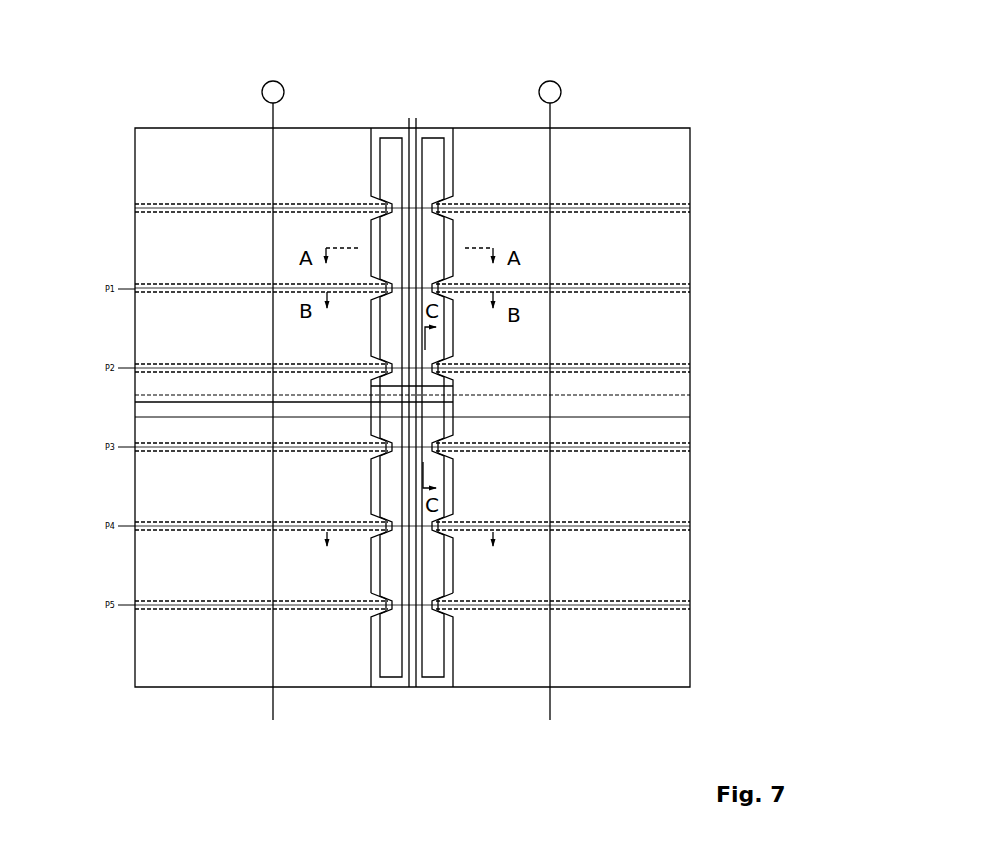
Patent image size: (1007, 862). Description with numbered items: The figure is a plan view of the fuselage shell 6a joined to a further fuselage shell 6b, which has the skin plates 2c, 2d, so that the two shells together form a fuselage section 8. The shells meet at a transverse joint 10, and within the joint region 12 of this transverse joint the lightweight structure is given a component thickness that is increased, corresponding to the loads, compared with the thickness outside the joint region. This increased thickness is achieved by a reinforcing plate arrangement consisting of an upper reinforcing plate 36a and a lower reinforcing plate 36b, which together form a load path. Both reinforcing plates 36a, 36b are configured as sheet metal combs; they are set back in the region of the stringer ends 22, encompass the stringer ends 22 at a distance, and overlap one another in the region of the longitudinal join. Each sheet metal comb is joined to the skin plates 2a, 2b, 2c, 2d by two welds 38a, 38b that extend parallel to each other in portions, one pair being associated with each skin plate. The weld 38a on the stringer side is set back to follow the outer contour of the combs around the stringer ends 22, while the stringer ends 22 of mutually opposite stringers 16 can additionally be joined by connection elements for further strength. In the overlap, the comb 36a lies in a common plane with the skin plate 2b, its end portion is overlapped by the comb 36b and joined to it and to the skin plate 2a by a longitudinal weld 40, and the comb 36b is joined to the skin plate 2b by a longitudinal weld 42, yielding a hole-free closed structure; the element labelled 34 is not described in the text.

The fuselage section 8 is at (735, 65).
The transverse joint 10 is at (451, 108).
The joint region 12 is at (397, 697).
The stringers 16 is at (138, 209).
The skin plate 2a is at (678, 248).
The skin plate 2b is at (678, 562).
The skin plate 2c is at (166, 265).
The skin plate 2d is at (166, 570).
The fuselage shell 6a is at (578, 125).
The further fuselage shell 6b is at (219, 120).
The stringer ends 22 is at (367, 624).
The crossover passage 34 is at (135, 402).
The upper reinforcing plate 36a is at (405, 150).
The lower reinforcing plate 36b is at (432, 680).
The weld 38a is at (380, 172).
The weld 38b is at (421, 140).
The longitudinal weld 40 is at (371, 386).
The longitudinal weld 42 is at (371, 418).